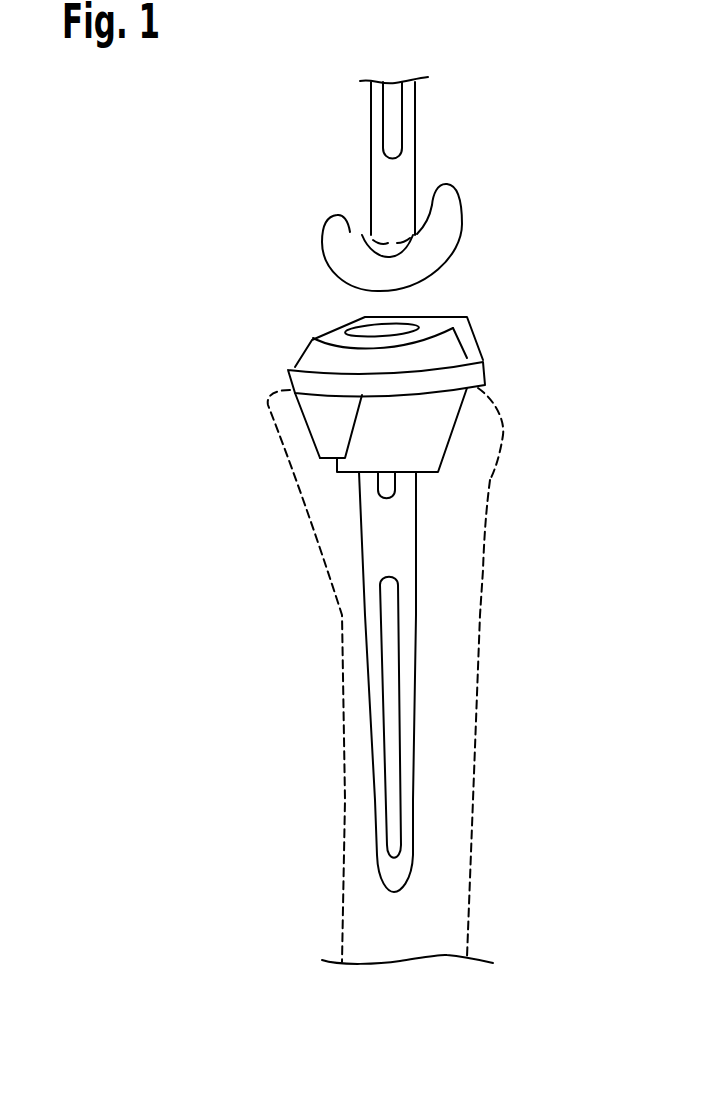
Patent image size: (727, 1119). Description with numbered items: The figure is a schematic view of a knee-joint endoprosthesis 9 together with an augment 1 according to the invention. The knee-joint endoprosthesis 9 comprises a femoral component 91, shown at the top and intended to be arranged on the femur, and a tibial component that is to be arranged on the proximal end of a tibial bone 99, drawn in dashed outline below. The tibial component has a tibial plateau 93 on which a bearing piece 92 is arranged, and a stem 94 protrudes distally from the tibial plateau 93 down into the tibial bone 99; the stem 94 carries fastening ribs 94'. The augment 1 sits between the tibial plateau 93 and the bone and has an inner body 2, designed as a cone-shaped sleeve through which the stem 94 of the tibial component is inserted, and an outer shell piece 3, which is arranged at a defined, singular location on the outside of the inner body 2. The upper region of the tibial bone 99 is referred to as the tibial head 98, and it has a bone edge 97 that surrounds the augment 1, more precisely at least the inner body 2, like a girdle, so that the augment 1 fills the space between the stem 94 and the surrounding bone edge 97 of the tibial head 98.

The augment 1 is at (401, 621).
The inner body 2 is at (433, 447).
The outer shell piece 3 is at (327, 422).
The knee-joint endoprosthesis 9 is at (500, 250).
The femoral component 91 is at (382, 188).
The bearing piece 92 is at (320, 357).
The tibial plateau 93 is at (472, 375).
The stem 94 is at (333, 682).
The fastening ribs 94' is at (403, 665).
The bone edge 97 is at (498, 460).
The tibial head 98 is at (450, 505).
The tibial bone 99 is at (484, 663).